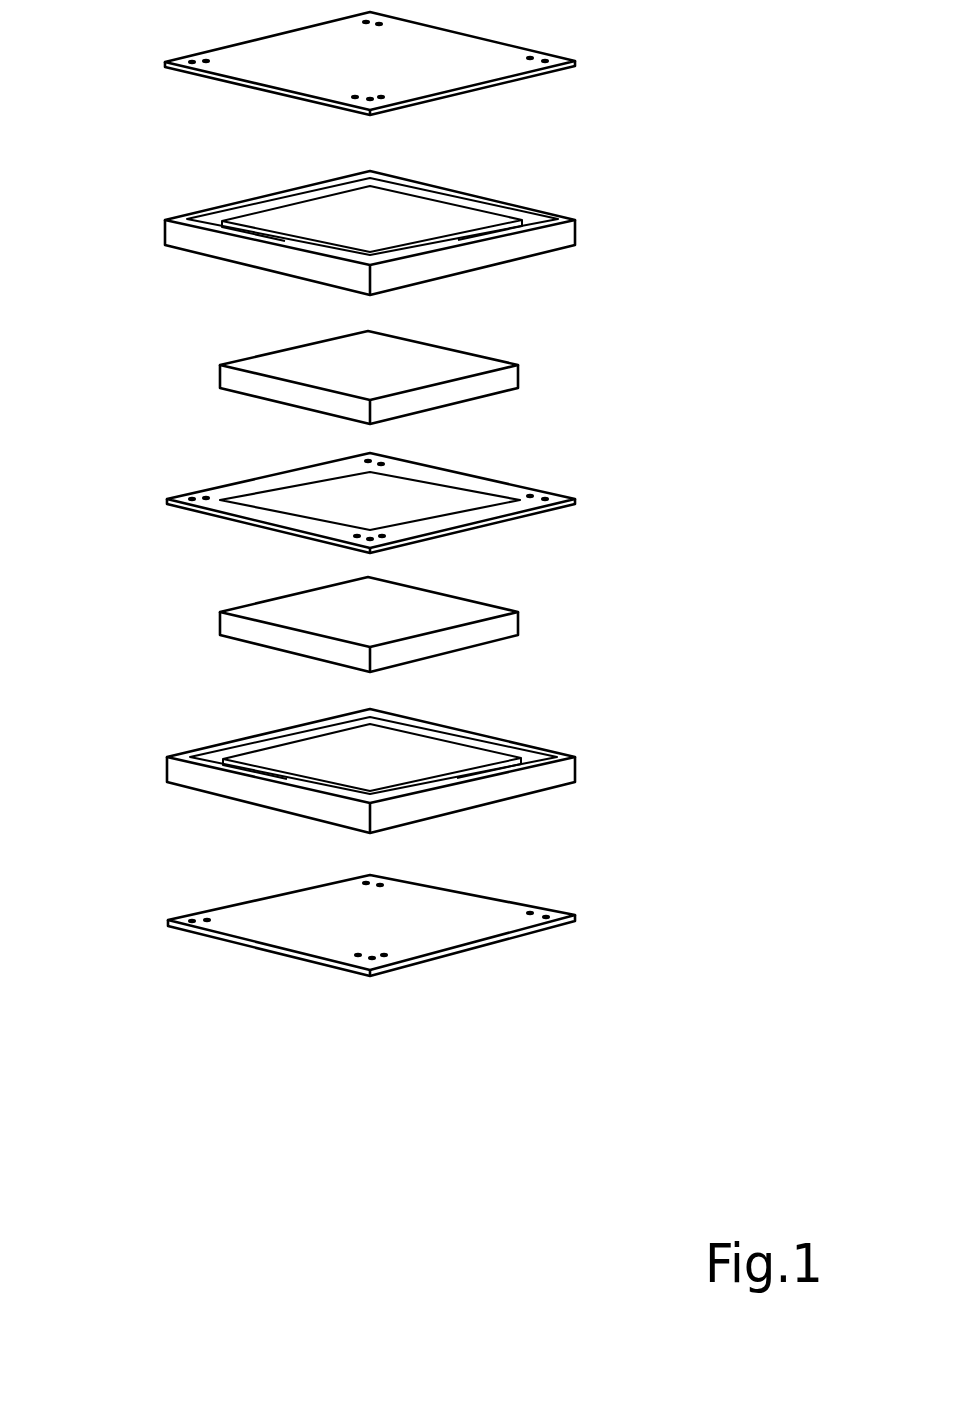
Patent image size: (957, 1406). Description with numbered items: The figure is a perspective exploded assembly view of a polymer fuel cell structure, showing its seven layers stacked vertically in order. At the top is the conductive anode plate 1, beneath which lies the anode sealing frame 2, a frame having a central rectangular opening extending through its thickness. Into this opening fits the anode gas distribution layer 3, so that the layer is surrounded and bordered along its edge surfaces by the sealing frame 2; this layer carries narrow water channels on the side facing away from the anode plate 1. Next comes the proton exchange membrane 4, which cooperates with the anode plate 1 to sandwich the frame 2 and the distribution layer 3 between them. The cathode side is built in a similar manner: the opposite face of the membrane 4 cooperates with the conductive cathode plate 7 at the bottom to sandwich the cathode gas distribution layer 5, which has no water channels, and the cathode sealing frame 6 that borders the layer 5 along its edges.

The conductive anode plate 1 is at (165, 62).
The anode sealing frame 2 is at (165, 220).
The anode gas distribution layer 3 is at (220, 365).
The proton exchange membrane 4 is at (167, 499).
The cathode gas distribution layer 5 is at (220, 612).
The cathode sealing frame 6 is at (167, 757).
The conductive cathode plate 7 is at (168, 920).